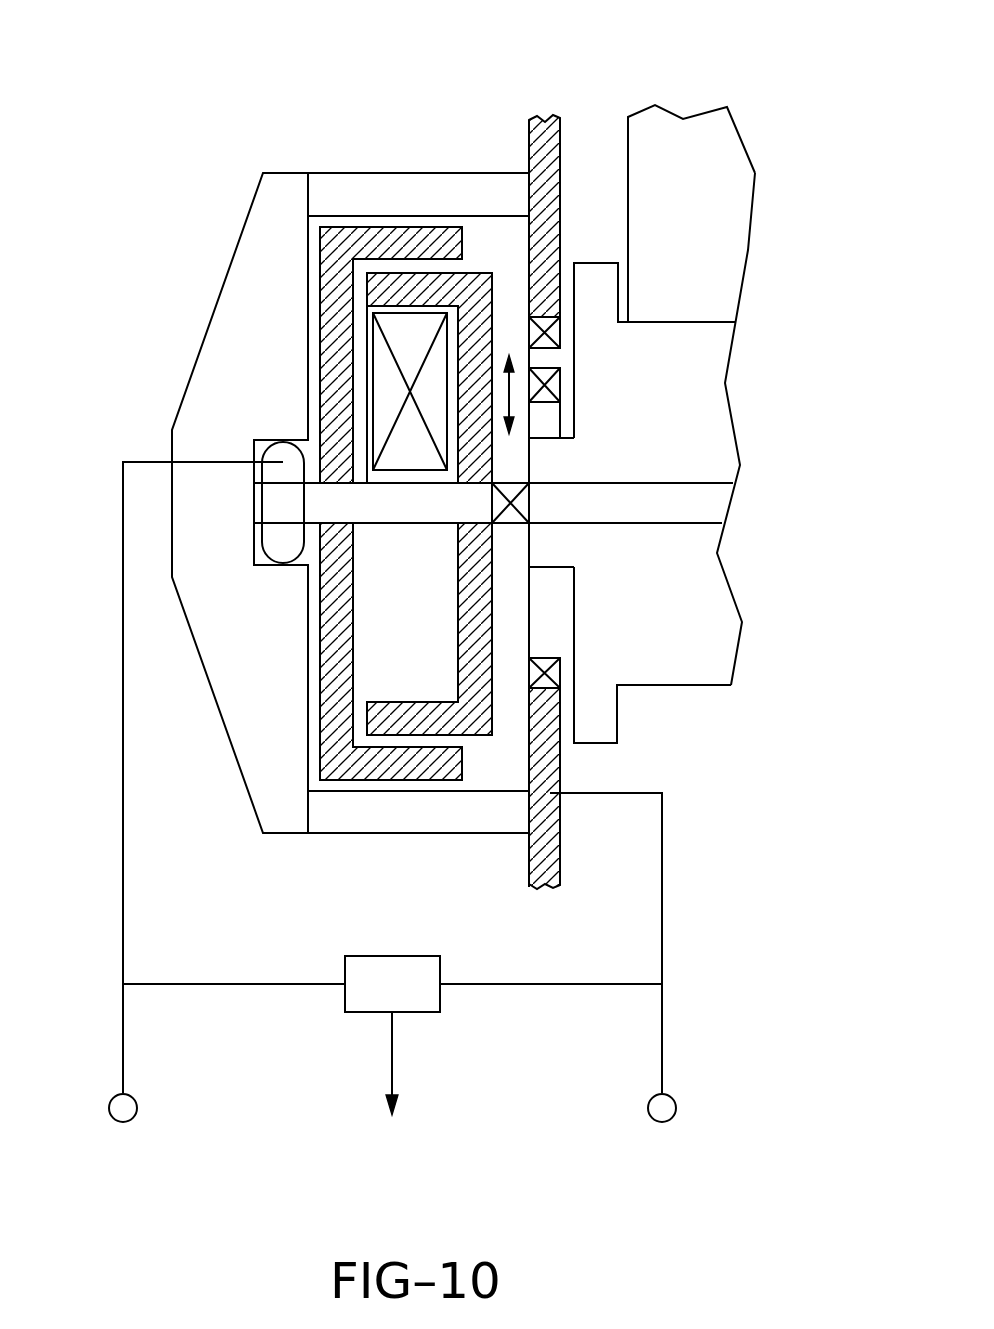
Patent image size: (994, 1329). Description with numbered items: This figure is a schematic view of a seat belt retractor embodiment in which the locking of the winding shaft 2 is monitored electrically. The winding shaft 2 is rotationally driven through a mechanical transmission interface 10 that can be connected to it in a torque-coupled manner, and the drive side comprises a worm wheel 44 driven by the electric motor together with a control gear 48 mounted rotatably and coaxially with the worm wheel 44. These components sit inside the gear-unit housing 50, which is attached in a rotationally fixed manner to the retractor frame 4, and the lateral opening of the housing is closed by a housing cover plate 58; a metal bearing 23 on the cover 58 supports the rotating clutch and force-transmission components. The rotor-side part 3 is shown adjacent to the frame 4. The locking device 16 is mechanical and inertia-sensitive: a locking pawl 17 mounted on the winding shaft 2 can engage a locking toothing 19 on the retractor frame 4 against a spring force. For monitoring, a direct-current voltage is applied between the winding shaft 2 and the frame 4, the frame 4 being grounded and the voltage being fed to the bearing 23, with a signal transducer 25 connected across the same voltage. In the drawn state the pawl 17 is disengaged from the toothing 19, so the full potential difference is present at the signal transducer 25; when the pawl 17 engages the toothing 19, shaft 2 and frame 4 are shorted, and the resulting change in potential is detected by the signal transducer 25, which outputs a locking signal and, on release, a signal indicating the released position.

The winding shaft 2 is at (700, 427).
The rotor hub 3 is at (677, 157).
The retractor frame 4 is at (538, 150).
The mechanical transmission interface 10 is at (512, 511).
The locking device 16 is at (574, 388).
The locking pawl 17 is at (546, 413).
The locking toothing 19 is at (553, 333).
The metal bearing 23 is at (285, 450).
The signal transducer 25 is at (392, 815).
The worm wheel 44 is at (378, 242).
The control gear 48 is at (405, 290).
The gear-unit housing 50 is at (385, 818).
The housing cover plate 58 is at (263, 757).